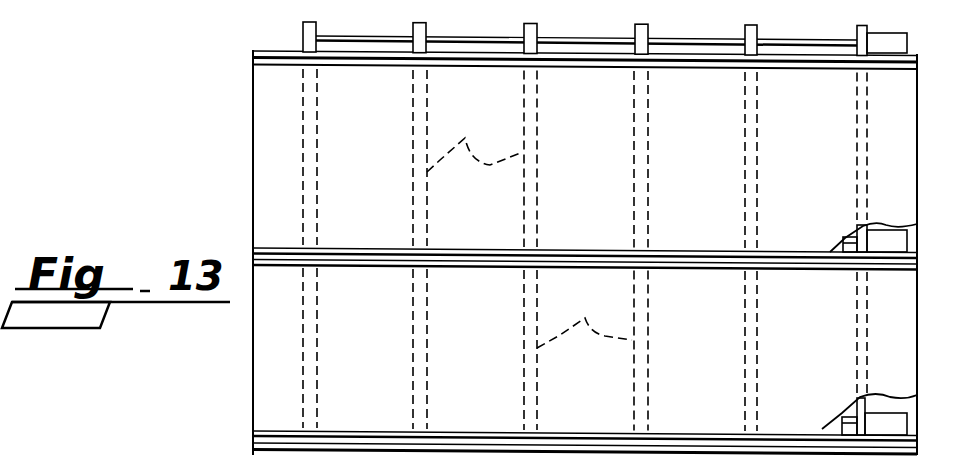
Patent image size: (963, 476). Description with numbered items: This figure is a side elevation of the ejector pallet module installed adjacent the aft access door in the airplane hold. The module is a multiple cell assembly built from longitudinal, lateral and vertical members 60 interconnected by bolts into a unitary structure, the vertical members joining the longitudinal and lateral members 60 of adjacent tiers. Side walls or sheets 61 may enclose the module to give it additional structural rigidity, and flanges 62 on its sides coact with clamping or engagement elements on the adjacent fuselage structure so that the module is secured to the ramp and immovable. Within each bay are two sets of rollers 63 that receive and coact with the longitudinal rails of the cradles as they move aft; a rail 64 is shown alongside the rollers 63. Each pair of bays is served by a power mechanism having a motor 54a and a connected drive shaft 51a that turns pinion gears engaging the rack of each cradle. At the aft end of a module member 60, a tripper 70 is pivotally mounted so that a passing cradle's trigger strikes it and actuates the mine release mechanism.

The drive shaft 51a is at (807, 239).
The motor 54a is at (869, 240).
The longitudinal, lateral and vertical members 60 is at (529, 233).
The side walls or sheets 61 is at (266, 137).
The flanges 62 is at (705, 443).
The rollers 63 is at (559, 57).
The rail 64 is at (815, 45).
The tripper 70 is at (878, 31).